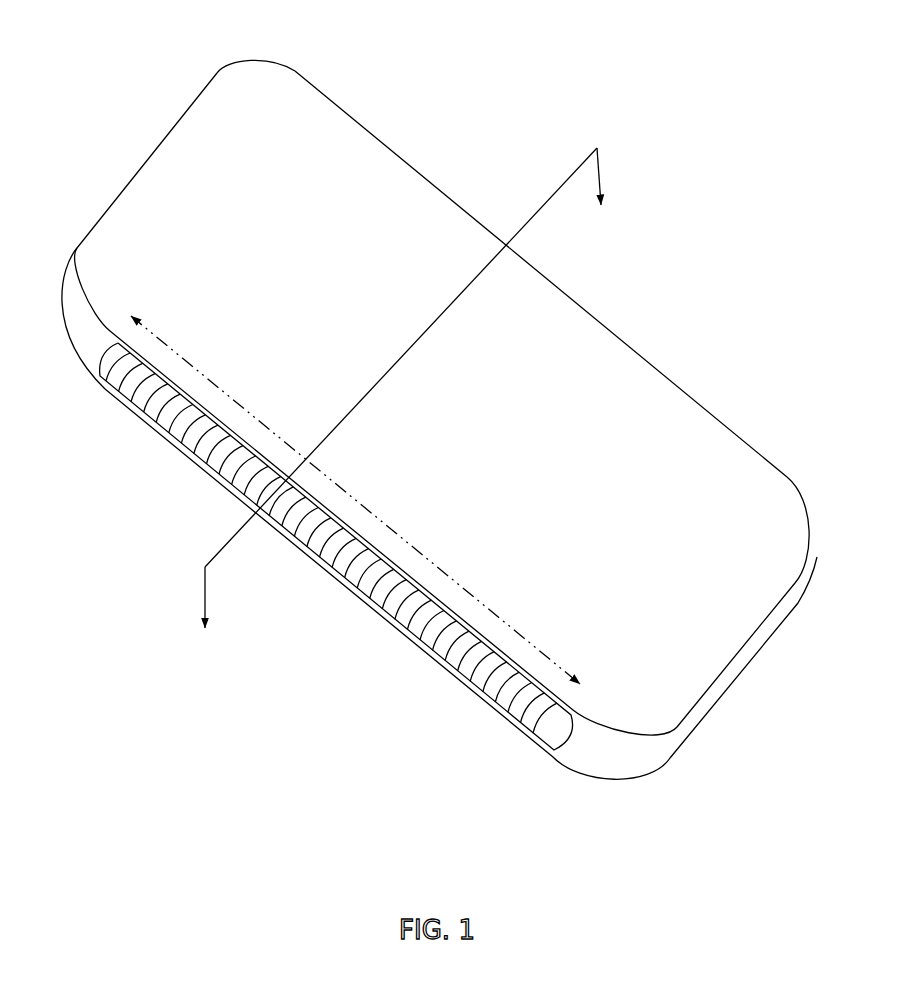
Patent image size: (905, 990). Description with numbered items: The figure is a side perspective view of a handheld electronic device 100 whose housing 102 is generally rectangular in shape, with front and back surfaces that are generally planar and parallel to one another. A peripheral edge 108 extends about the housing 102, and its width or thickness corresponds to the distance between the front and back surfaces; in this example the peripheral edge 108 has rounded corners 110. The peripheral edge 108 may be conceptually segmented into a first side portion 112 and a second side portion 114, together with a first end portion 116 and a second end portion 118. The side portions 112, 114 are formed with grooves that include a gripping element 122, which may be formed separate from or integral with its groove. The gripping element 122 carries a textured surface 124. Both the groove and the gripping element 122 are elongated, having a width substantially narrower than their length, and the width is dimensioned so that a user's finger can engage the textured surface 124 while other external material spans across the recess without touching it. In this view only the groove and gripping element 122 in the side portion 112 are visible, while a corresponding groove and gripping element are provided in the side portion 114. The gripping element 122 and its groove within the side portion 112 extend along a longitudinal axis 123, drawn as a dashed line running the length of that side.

The handheld electronic device 100 is at (56, 112).
The housing 102 is at (747, 462).
The peripheral edge 108 is at (778, 623).
The rounded corners 110 is at (258, 60).
The side portion 112 is at (74, 372).
The side portion 114 is at (412, 158).
The end portion 116 is at (150, 146).
The end portion 118 is at (756, 703).
The gripping element 122 is at (211, 459).
The longitudinal axis 123 is at (183, 357).
The textured surface 124 is at (327, 553).